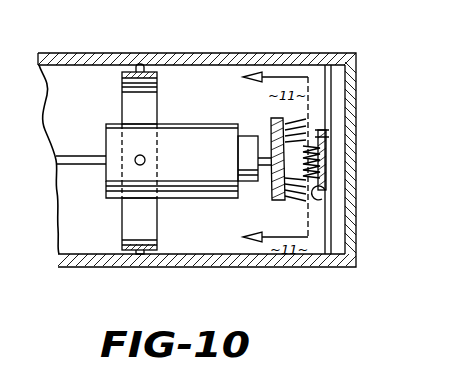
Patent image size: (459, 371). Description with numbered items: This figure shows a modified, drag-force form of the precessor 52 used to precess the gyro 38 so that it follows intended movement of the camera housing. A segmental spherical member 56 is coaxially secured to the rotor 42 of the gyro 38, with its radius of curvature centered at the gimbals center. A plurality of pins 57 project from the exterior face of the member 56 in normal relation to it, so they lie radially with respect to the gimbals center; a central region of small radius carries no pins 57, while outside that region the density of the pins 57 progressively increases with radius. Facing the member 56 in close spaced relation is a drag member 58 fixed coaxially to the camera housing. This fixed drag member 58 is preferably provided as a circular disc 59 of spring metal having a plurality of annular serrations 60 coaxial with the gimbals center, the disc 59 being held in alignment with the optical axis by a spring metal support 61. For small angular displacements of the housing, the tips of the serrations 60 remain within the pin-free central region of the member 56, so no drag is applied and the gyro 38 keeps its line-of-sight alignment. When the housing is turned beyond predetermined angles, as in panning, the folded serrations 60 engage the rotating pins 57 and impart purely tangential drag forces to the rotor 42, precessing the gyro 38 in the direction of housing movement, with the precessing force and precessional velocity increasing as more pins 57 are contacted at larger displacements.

The gyro 38 is at (193, 128).
The rotor 42 is at (246, 137).
The precessor 52 is at (313, 122).
The segmental spherical member 56 is at (278, 191).
The pins 57 is at (290, 200).
The drag member 58 is at (337, 151).
The circular disc 59 is at (325, 140).
The annular serrations 60 is at (325, 193).
The spring metal support 61 is at (333, 222).